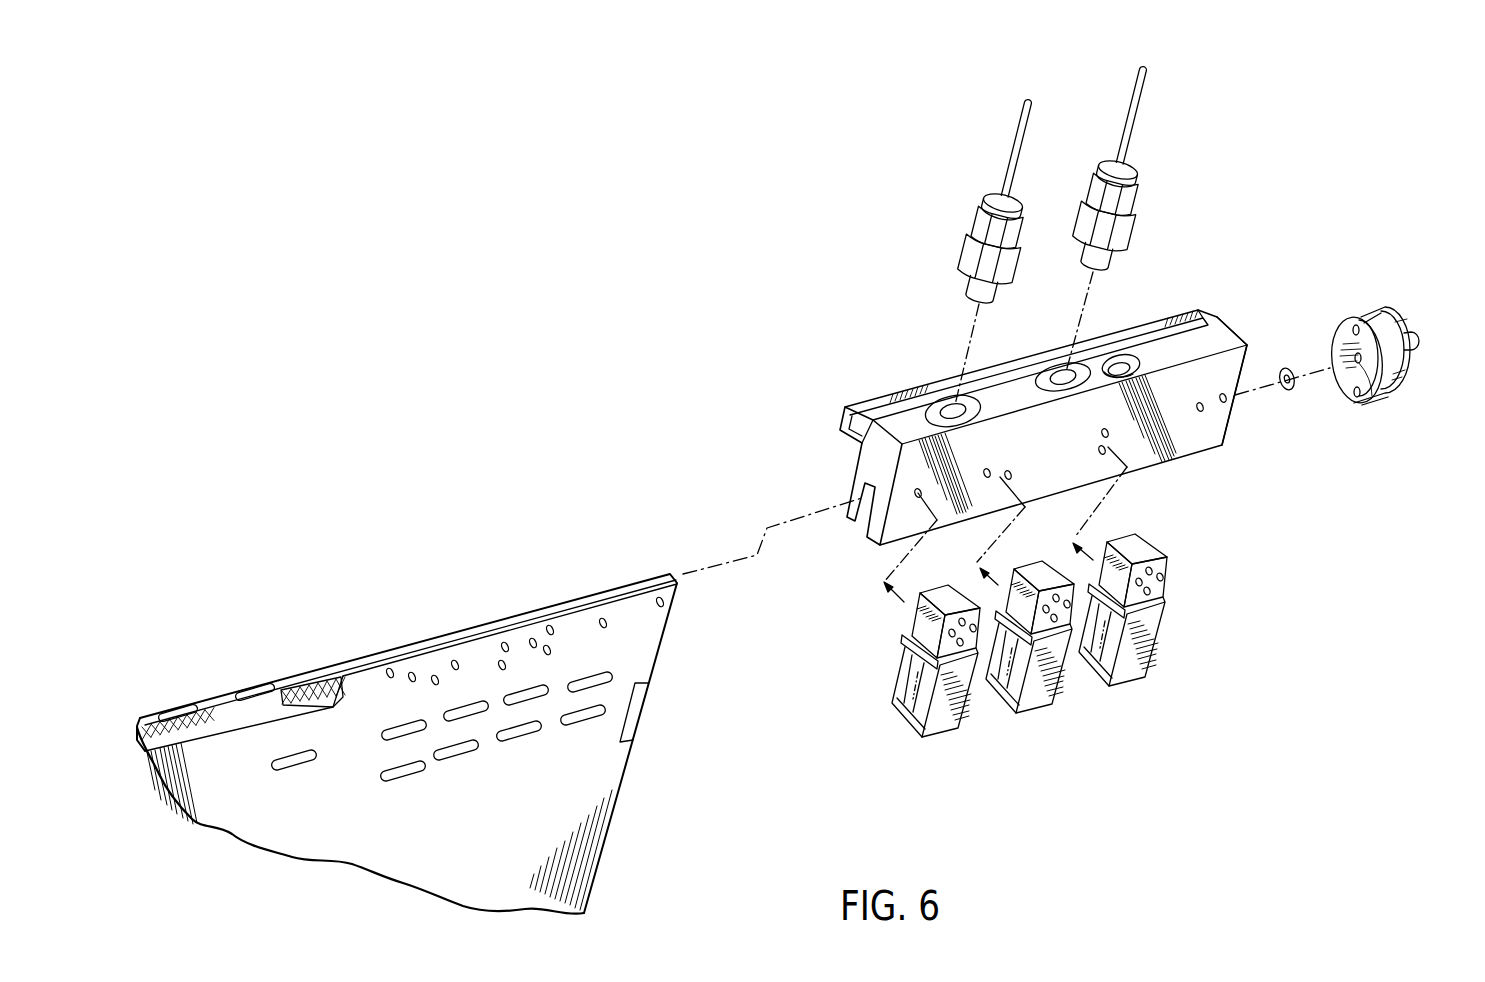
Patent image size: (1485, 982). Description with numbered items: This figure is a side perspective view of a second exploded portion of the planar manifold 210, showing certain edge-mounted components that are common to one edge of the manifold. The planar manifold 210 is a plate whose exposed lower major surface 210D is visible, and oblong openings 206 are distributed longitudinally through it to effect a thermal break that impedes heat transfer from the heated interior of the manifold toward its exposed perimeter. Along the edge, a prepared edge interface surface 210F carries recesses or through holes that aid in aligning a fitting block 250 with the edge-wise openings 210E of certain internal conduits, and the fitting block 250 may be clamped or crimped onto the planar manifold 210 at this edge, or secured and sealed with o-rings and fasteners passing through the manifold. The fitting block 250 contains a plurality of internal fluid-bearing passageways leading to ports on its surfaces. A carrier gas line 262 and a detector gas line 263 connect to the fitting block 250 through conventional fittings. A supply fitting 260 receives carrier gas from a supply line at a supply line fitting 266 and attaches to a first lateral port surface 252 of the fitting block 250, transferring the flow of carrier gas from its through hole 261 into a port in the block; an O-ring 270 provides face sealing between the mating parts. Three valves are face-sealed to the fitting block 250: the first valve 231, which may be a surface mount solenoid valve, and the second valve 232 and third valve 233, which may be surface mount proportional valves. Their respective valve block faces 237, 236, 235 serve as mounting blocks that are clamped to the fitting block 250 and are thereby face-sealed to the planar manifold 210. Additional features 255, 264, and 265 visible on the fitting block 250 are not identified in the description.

The oblong openings 206 is at (500, 743).
The planar manifold 210 is at (607, 833).
The lower major surface 210D is at (485, 869).
The edge-wise openings 210E is at (177, 705).
The edge interface surface 210F is at (322, 688).
The first valve 231 is at (892, 703).
The second valve 232 is at (1036, 712).
The third valve 233 is at (1163, 613).
The valve block face 235 is at (1147, 538).
The valve block face 236 is at (1037, 563).
The valve block face 237 is at (967, 562).
The fitting block 250 is at (1207, 437).
The first lateral port surface 252 is at (1234, 337).
The rail groove 255 is at (1197, 314).
The supply fitting 260 is at (1356, 312).
The through hole 261 is at (1387, 400).
The carrier gas line 262 is at (1137, 82).
The detector gas line 263 is at (1018, 128).
The washer 264 is at (1063, 375).
The washer 265 is at (945, 408).
The supply line fitting 266 is at (1421, 332).
The O-rings 270 is at (1290, 391).